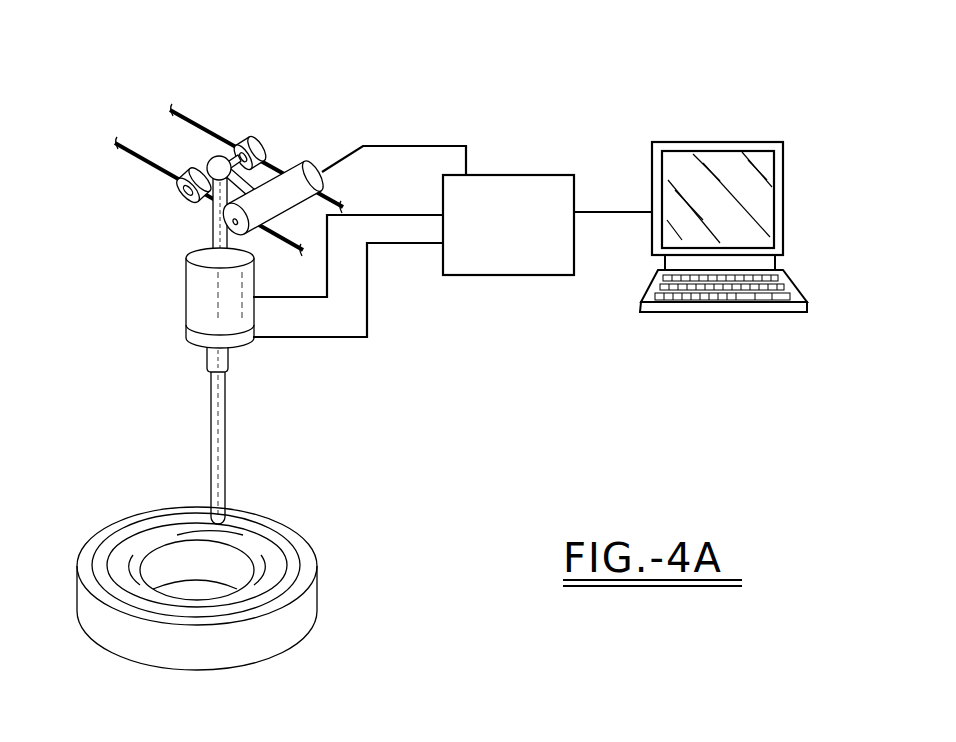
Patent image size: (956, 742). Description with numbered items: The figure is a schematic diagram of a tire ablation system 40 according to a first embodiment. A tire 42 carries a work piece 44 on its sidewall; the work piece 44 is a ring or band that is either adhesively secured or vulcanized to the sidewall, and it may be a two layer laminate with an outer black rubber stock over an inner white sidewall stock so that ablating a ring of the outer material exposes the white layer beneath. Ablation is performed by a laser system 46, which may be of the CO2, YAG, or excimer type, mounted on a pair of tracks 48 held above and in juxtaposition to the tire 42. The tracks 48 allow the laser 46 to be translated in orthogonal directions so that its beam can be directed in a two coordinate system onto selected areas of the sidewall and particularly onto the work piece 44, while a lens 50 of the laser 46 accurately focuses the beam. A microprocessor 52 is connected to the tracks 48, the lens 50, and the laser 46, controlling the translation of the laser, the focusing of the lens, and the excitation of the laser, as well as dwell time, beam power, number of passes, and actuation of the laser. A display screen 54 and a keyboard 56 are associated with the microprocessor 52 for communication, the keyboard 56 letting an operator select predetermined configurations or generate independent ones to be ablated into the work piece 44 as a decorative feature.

The tire ablation system 40 is at (598, 441).
The tire 42 is at (317, 557).
The work piece 44 is at (240, 523).
The laser system 46 is at (192, 297).
The tracks 48 is at (156, 200).
The lens 50 is at (240, 343).
The microprocessor 52 is at (503, 276).
The display screen 54 is at (773, 142).
The keyboard 56 is at (790, 310).